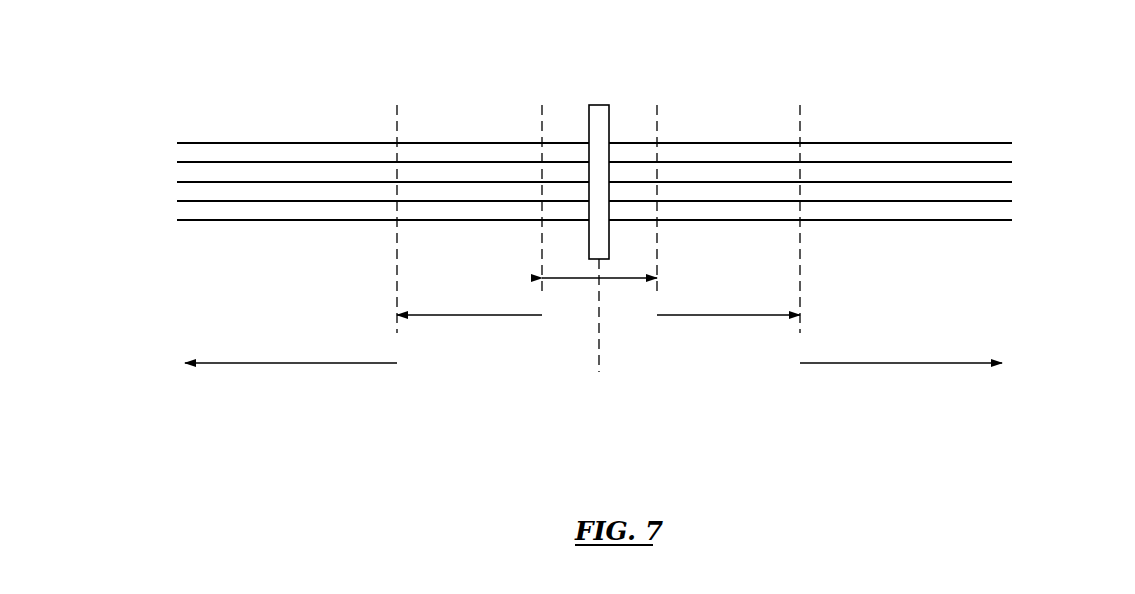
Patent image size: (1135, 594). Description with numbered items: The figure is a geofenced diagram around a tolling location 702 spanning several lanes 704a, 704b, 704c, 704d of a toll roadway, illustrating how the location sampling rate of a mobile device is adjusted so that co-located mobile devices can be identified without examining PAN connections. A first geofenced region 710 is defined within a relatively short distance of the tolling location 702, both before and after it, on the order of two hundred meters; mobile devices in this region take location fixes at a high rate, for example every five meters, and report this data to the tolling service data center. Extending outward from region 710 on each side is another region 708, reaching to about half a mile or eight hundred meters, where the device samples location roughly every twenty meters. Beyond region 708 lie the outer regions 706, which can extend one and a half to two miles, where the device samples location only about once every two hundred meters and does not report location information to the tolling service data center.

The tolling location 702 is at (598, 104).
The lane 704a is at (178, 154).
The lane 704b is at (178, 173).
The lane 704c is at (178, 190).
The lane 704d is at (178, 212).
The region 706 is at (300, 364).
The region 708 is at (490, 316).
The first geofenced region 710 is at (565, 276).